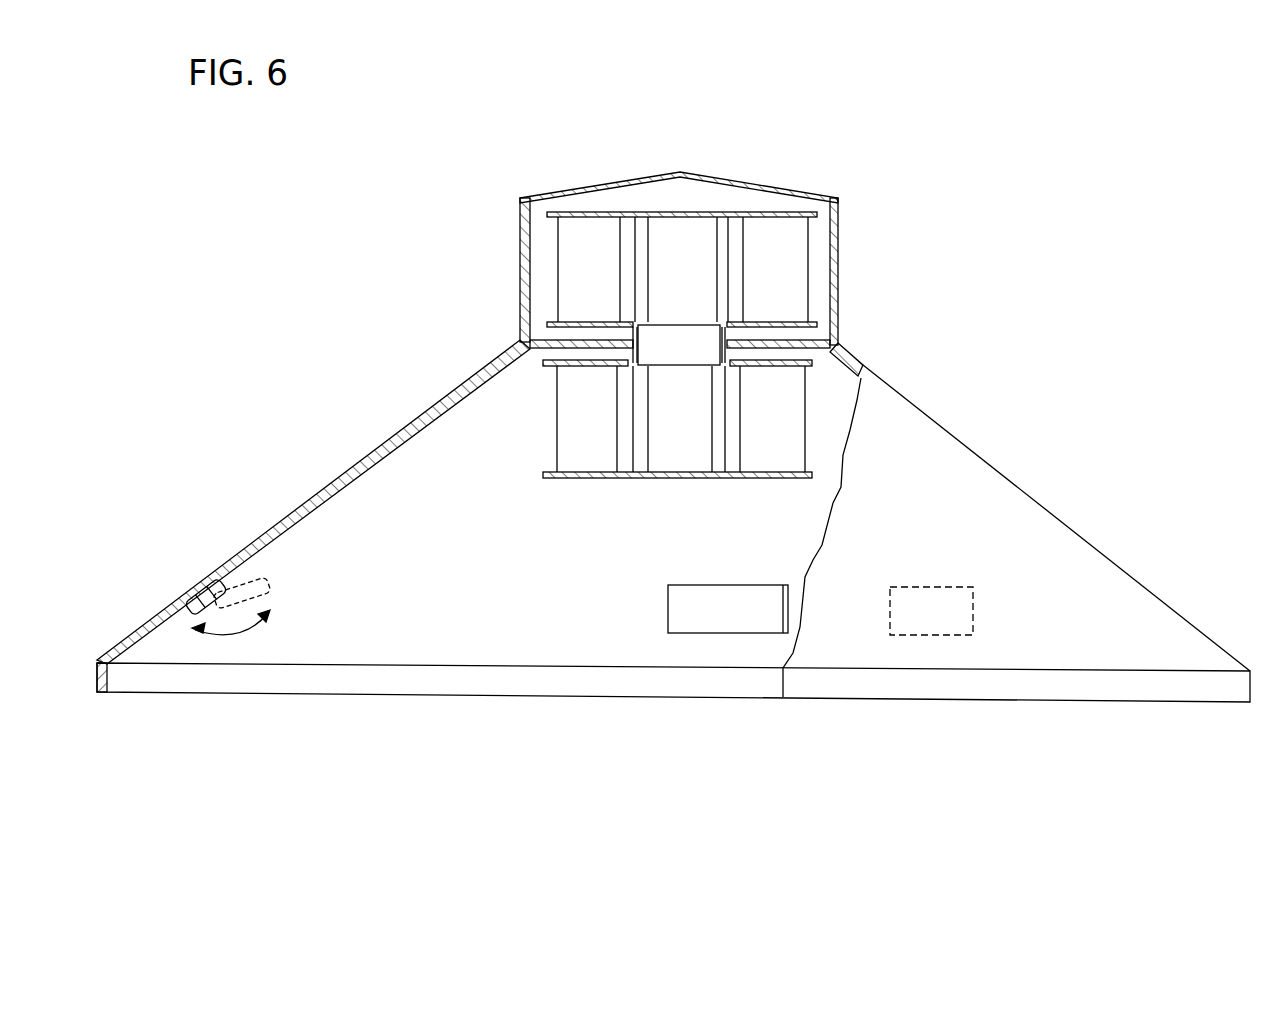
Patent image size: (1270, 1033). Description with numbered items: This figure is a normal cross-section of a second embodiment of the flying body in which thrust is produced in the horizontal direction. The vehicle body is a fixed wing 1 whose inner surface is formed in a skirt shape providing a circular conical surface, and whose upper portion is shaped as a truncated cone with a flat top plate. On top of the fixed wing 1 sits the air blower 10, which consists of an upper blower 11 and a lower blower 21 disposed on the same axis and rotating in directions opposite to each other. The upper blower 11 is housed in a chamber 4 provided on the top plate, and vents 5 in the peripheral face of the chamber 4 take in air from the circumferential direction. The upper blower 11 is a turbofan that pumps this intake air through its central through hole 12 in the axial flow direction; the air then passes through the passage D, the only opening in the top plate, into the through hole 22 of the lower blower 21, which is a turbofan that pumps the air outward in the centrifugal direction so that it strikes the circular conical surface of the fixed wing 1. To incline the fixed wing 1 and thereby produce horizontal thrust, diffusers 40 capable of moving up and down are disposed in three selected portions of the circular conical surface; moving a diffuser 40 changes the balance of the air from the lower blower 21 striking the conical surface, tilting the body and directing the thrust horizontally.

The fixed wing 1 is at (1097, 540).
The top plate of housing 4 is at (776, 180).
The vents 5 is at (514, 251).
The air blower 10 is at (693, 243).
The upper blower 11 is at (545, 278).
The through hole 12 is at (688, 332).
The lower blower 21 is at (549, 418).
The through hole 22 is at (673, 395).
The diffusers 40 is at (214, 598).
The passage D is at (688, 365).